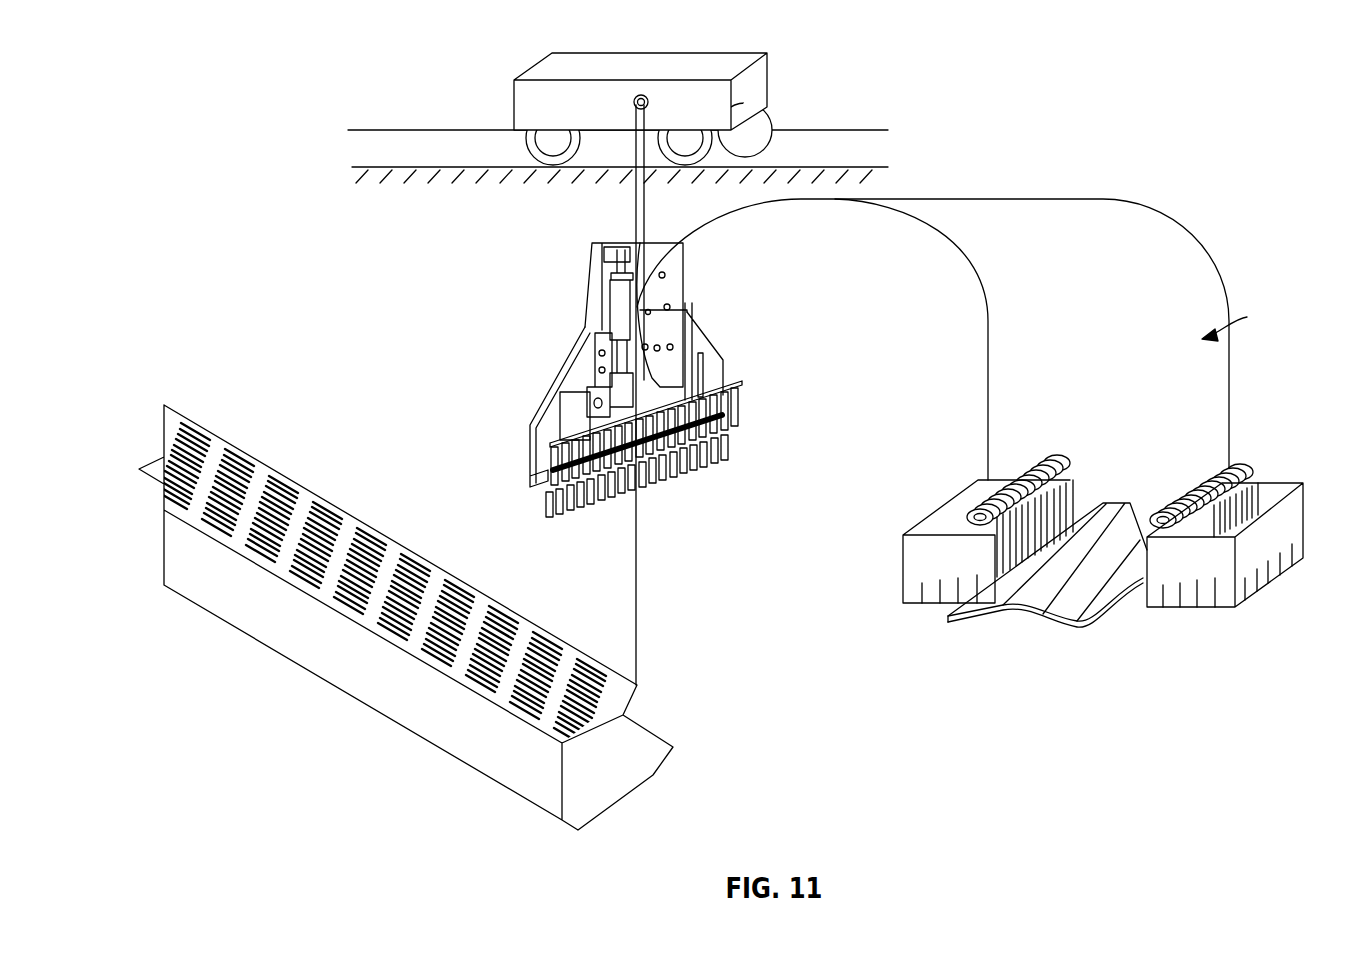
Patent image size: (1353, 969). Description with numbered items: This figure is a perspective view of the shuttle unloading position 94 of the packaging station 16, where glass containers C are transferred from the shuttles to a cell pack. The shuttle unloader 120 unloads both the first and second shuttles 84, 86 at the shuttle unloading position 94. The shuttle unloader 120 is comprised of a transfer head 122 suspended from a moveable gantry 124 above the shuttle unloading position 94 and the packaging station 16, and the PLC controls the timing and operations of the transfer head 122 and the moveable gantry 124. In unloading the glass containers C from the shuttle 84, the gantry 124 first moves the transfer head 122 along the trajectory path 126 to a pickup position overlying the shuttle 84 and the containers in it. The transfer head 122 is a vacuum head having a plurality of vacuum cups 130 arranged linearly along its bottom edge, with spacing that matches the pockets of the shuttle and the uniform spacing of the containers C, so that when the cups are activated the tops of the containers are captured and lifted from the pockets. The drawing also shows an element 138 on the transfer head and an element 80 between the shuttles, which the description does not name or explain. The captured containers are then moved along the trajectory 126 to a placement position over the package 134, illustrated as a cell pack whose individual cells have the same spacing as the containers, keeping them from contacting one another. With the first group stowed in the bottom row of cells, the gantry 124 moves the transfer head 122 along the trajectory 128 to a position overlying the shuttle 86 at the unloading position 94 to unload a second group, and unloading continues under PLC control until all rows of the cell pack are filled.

The shuttle unloader 120 is at (222, 85).
The moveable gantry 124 is at (770, 80).
The transfer head 122 is at (896, 385).
The actuator cylinder 138 is at (620, 295).
The vacuum cups 130 is at (743, 396).
The glass containers C is at (702, 458).
The trajectory path 126 is at (1175, 227).
The trajectory 128 is at (959, 256).
The shuttle unloading position 94 is at (1242, 321).
The guide plate 80 is at (1135, 490).
The second shuttle 86 is at (940, 603).
The first shuttle 84 is at (1190, 607).
The package 134 is at (302, 484).
The packaging station 16 is at (618, 492).